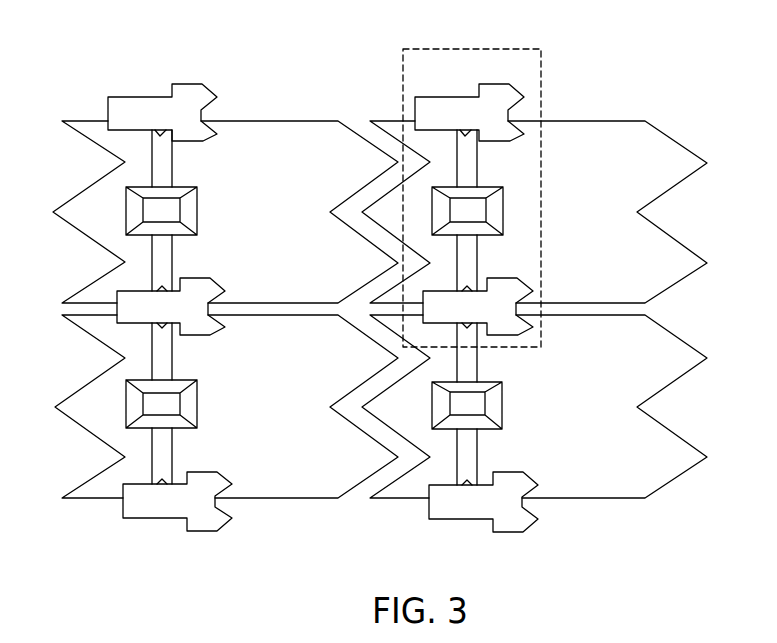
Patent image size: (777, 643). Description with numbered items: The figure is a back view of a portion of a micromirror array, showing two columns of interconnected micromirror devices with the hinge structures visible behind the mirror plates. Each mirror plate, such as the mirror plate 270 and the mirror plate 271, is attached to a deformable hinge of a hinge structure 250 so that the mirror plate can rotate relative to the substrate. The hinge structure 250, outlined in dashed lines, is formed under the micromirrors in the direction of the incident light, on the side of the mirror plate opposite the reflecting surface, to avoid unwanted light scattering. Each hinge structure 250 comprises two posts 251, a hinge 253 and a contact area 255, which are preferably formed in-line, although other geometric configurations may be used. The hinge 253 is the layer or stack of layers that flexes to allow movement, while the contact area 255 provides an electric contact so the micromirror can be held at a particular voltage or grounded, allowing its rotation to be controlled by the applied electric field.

The hinge structure 250 is at (555, 63).
The posts 251 is at (155, 93).
The hinge 253 is at (180, 162).
The contact area 255 is at (200, 224).
The mirror plate 270 is at (248, 121).
The mirror plate 271 is at (267, 505).